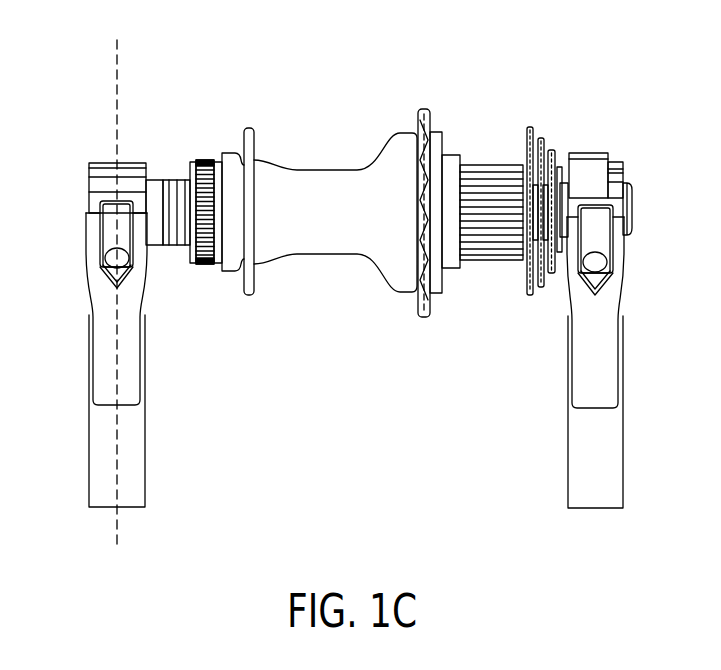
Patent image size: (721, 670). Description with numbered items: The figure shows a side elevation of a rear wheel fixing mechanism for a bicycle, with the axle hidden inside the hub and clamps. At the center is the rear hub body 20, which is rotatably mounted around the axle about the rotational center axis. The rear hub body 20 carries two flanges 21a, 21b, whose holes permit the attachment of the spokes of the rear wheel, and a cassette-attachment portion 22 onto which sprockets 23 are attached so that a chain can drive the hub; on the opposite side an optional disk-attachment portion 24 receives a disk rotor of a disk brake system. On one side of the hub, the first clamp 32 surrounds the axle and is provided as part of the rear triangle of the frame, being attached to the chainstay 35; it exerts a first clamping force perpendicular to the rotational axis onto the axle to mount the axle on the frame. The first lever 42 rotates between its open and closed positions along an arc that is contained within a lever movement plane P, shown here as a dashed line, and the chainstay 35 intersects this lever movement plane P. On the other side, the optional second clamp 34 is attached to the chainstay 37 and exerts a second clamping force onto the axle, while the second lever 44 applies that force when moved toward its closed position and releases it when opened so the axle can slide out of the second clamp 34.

The lever movement plane P is at (115, 80).
The rear hub body 20 is at (333, 168).
The flange 21a is at (248, 128).
The flange 21b is at (424, 108).
The cassette-attachment portion 22 is at (481, 165).
The sprockets 23 is at (532, 135).
The disk-attachment portion 24 is at (205, 160).
The first clamp 32 is at (100, 182).
The second clamp 34 is at (620, 162).
The chainstay 35 is at (130, 462).
The chainstay 37 is at (614, 467).
The first lever 42 is at (130, 367).
The second lever 44 is at (600, 364).